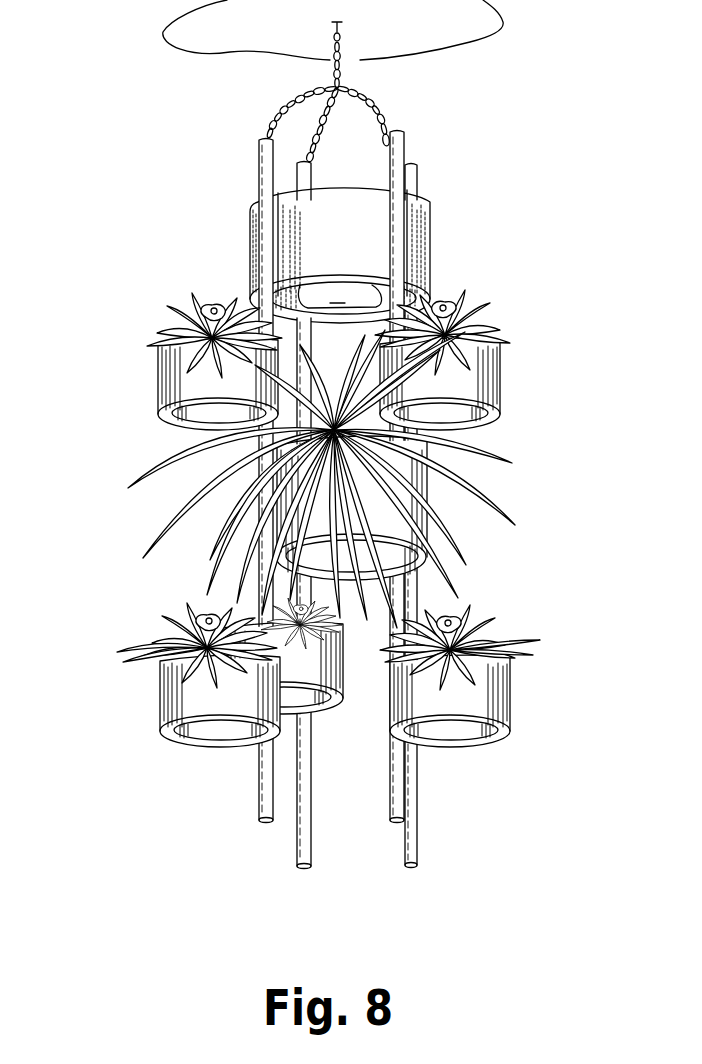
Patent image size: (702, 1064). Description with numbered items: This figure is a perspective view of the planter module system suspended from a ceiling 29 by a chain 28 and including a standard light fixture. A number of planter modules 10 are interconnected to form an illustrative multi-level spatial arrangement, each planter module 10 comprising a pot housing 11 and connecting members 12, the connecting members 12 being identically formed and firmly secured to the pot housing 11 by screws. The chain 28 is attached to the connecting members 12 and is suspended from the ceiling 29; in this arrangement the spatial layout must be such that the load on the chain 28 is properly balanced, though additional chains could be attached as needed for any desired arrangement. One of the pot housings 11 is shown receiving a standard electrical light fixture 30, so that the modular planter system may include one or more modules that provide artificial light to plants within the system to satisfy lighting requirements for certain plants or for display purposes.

The planter module 10 is at (336, 500).
The pot housing 11 is at (338, 255).
The connecting member 12 is at (338, 500).
The chain 28 is at (356, 102).
The ceiling 29 is at (483, 32).
The standard electrical light fixture 30 is at (315, 295).